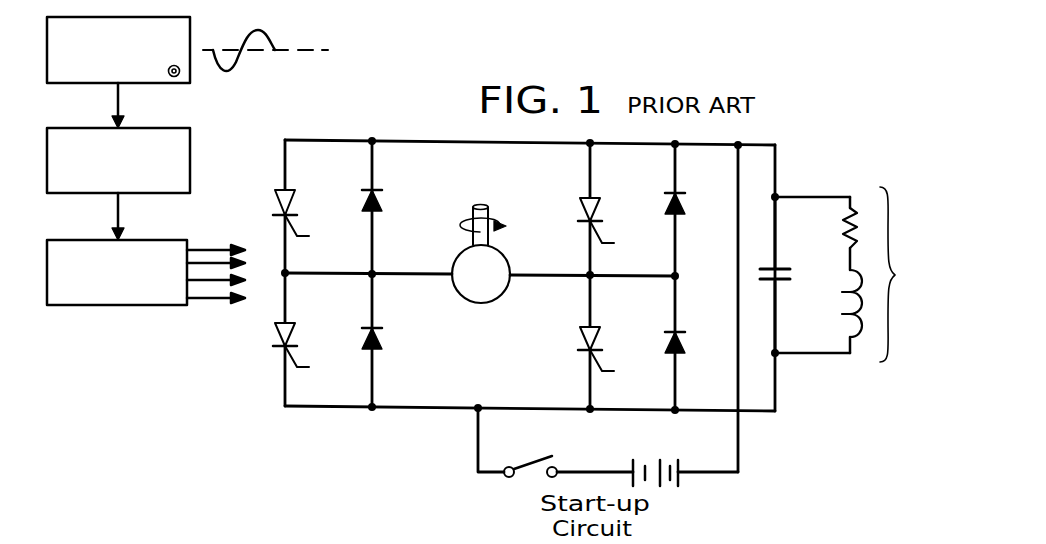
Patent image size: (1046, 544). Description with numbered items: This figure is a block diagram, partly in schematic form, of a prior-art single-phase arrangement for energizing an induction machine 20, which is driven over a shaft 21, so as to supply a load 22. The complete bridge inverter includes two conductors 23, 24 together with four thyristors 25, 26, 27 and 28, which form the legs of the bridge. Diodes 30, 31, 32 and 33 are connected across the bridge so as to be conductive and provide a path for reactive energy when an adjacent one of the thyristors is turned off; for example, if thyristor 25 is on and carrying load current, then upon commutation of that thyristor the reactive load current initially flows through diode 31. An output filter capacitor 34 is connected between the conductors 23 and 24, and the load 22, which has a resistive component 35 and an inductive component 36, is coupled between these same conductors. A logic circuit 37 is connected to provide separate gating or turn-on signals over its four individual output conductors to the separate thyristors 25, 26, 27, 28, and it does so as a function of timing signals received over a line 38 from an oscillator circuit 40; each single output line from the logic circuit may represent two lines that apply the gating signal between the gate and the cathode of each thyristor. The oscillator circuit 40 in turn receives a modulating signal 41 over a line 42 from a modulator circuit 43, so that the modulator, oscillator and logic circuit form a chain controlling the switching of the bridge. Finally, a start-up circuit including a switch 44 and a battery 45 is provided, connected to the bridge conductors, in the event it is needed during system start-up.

The induction machine 20 is at (480, 311).
The shaft 21 is at (481, 207).
The load 22 is at (853, 274).
The conductor 23 is at (441, 140).
The conductor 24 is at (383, 410).
The thyristor 25 is at (303, 213).
The thyristor 26 is at (303, 345).
The thyristor 27 is at (607, 220).
The thyristor 28 is at (607, 349).
The diode 30 is at (388, 206).
The diode 31 is at (388, 344).
The diode 32 is at (695, 210).
The diode 33 is at (695, 348).
The output filter capacitor 34 is at (791, 275).
The resistive component 35 is at (835, 228).
The inductive component 36 is at (836, 303).
The logic circuit 37 is at (130, 272).
The line 38 is at (112, 207).
The oscillator circuit 40 is at (102, 160).
The modulating signal 41 is at (273, 42).
The line 42 is at (112, 97).
The modulator circuit 43 is at (102, 50).
The switch 44 is at (555, 442).
The battery 45 is at (672, 460).